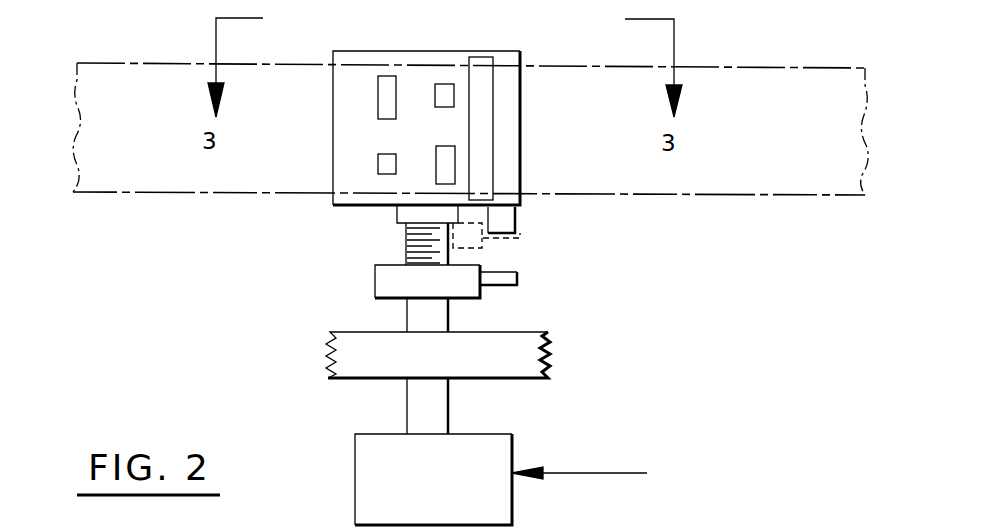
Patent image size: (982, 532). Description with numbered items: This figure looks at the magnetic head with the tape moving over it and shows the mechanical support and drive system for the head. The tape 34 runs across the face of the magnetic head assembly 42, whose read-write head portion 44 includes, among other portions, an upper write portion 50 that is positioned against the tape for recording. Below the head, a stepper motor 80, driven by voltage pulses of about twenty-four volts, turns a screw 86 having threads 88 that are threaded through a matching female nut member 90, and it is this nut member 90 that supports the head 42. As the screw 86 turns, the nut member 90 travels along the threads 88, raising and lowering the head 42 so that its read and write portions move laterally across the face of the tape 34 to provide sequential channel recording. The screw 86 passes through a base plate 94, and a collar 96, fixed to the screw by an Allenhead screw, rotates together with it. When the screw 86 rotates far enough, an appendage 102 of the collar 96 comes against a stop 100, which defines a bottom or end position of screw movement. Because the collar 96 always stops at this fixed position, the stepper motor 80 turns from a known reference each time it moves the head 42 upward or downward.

The tape 34 is at (772, 196).
The magnetic head assembly 42 is at (446, 40).
The female nut member 90 is at (408, 213).
The threads 88 is at (407, 240).
The stop 100 is at (517, 215).
The collar 96 is at (478, 300).
The appendage 102 is at (498, 272).
The screw 86 is at (390, 318).
The base plate 94 is at (552, 360).
The stepper motor 80 is at (513, 518).
The read-write head portion 44 is at (845, 531).
The upper write portion 50 is at (764, 526).